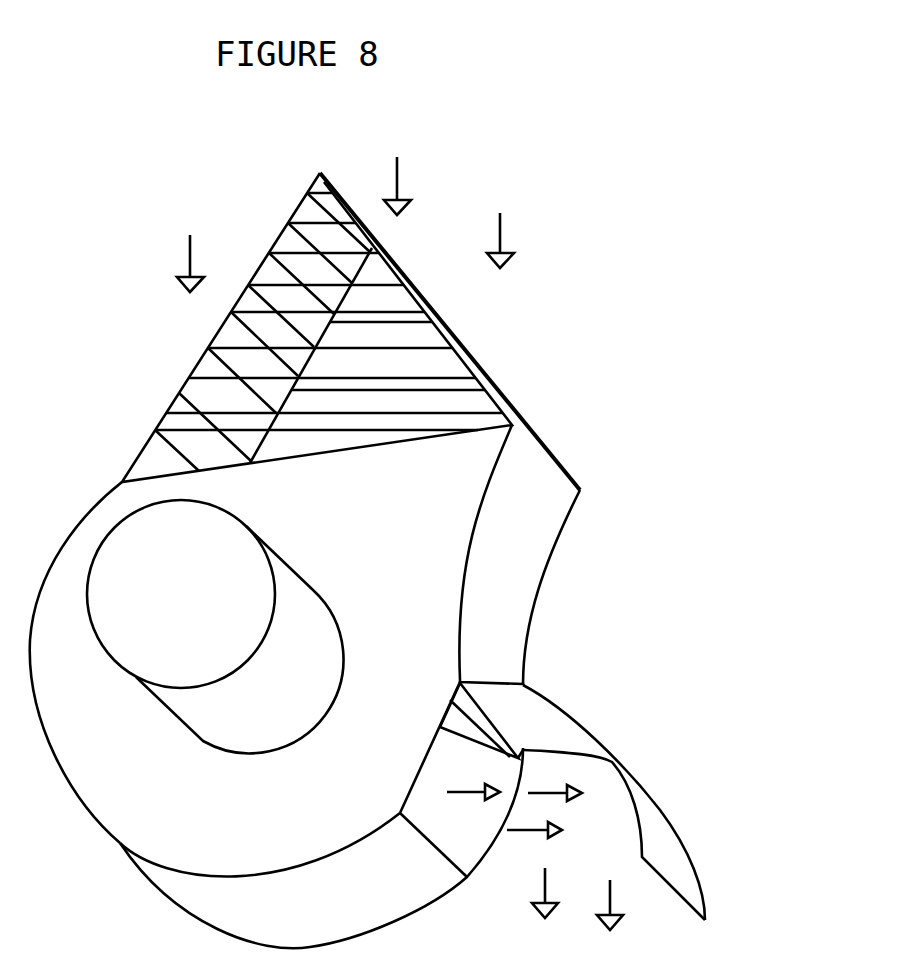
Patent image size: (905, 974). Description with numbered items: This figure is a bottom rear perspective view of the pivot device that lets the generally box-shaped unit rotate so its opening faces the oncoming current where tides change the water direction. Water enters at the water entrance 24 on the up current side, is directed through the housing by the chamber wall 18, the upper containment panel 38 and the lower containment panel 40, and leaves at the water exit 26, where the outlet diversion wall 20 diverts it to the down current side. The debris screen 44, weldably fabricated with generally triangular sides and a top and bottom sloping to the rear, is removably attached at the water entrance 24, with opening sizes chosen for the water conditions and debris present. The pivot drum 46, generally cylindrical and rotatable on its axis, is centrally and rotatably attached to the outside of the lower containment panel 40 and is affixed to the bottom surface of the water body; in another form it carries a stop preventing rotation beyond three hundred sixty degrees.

The chamber wall 18 is at (350, 905).
The outlet diversion wall 20 is at (662, 832).
The water entrance 24 is at (363, 403).
The water exit 26 is at (558, 885).
The upper containment panel 38 is at (475, 811).
The lower containment panel 40 is at (378, 526).
The debris screen 44 is at (400, 294).
The pivot drum 46 is at (232, 608).